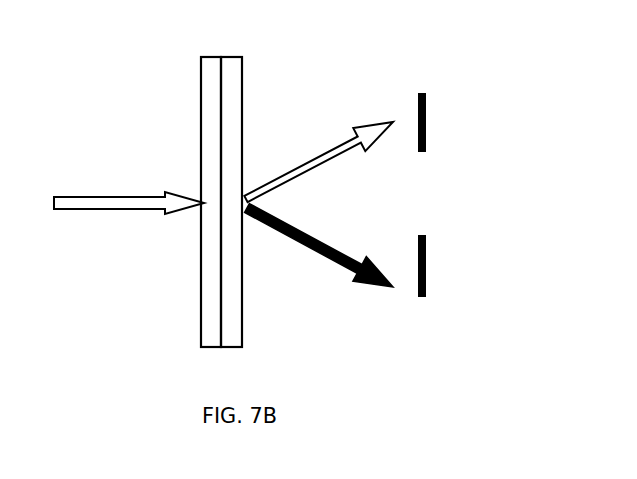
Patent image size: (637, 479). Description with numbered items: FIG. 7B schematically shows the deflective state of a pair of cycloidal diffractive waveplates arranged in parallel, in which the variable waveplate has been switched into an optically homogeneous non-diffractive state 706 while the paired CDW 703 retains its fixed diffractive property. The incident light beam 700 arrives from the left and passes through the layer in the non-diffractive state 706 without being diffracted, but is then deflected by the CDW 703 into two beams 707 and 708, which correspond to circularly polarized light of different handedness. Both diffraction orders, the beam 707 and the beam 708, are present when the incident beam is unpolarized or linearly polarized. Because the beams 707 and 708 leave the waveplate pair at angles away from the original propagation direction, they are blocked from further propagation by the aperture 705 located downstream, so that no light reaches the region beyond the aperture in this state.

The incident light beam 700 is at (143, 200).
The CDW with a fixed diffractive property 703 is at (235, 303).
The aperture 705 is at (425, 257).
The non-diffractive state 706 is at (210, 302).
The beam 707 is at (338, 132).
The beam 708 is at (358, 275).